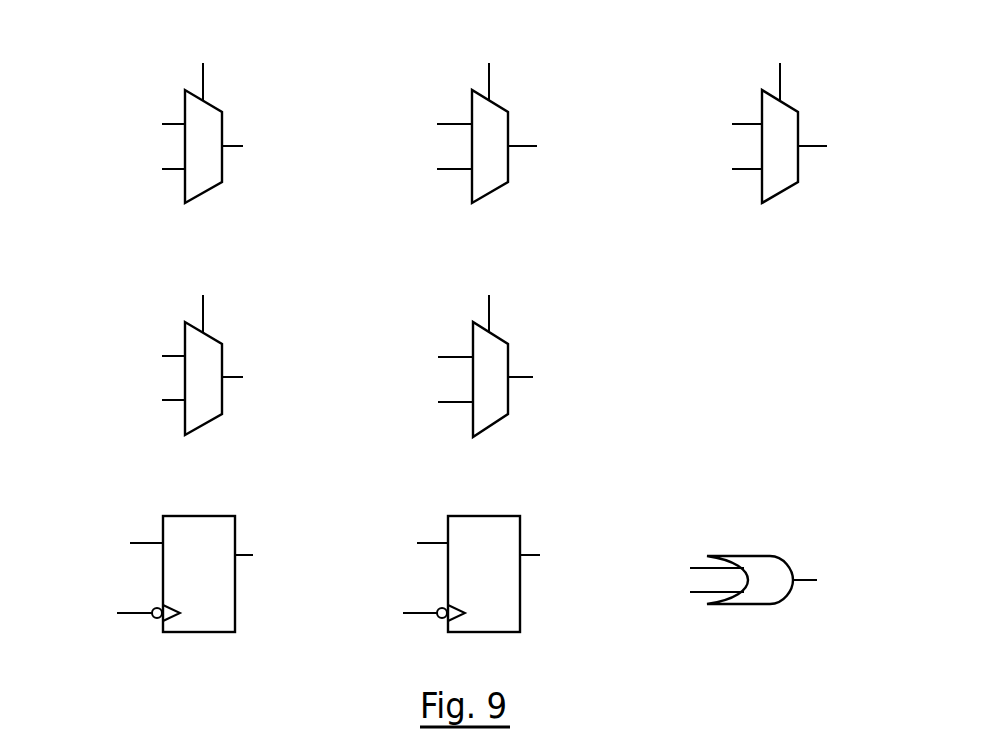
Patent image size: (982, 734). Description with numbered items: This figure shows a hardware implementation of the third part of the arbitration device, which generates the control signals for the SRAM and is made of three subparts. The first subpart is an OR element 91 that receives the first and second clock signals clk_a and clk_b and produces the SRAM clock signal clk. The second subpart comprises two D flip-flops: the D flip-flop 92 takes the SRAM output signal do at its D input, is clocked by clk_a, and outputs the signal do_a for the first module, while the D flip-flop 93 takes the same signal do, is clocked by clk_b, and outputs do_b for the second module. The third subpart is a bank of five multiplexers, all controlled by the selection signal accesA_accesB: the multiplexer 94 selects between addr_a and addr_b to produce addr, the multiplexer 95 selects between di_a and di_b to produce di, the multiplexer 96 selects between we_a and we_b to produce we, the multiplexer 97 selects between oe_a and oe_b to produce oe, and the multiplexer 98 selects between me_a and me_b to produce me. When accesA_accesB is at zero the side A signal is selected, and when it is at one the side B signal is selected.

The OR element 91 is at (760, 597).
The D flip-flop 92 is at (197, 625).
The D flip-flop 93 is at (482, 625).
The multiplexer 94 is at (207, 175).
The multiplexer 95 is at (485, 178).
The multiplexer 96 is at (778, 182).
The multiplexer 97 is at (205, 410).
The multiplexer 98 is at (485, 413).